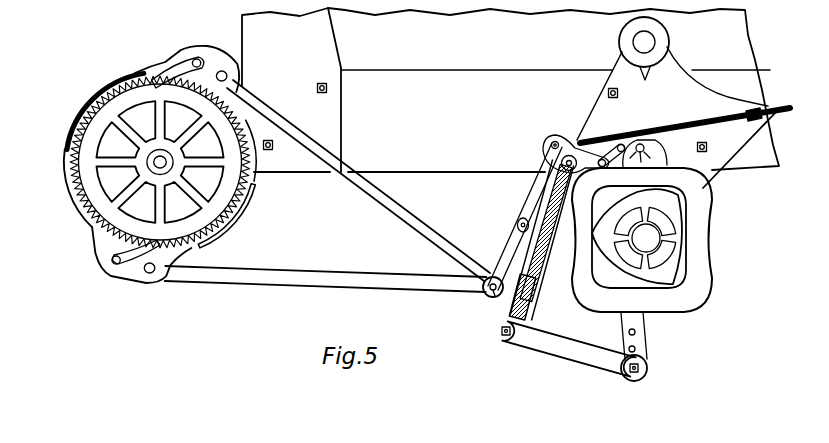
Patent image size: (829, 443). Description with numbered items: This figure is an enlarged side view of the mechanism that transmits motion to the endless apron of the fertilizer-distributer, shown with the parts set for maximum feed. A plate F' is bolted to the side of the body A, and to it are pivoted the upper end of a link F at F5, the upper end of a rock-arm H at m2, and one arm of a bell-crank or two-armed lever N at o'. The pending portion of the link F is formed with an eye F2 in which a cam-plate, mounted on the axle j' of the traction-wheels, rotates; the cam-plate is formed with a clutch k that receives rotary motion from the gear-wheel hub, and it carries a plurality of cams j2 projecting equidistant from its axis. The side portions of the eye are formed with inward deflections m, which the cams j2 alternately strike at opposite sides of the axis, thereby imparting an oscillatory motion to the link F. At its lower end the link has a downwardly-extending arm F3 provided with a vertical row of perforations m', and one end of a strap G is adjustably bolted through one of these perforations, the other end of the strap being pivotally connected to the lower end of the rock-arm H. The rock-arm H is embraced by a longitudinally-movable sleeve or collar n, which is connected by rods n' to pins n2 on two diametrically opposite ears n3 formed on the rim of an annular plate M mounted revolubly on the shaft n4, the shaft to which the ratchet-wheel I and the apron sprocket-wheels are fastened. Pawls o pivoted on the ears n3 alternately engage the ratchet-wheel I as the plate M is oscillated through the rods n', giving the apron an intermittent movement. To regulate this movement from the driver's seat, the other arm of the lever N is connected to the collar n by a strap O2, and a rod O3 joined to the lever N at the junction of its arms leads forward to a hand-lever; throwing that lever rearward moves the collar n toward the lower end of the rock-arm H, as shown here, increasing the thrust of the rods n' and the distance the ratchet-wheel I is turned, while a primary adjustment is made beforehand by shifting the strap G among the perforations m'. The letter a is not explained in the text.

The body A is at (510, 90).
The frame side bar a is at (555, 94).
The plate F' is at (677, 102).
The rod O3 is at (684, 128).
The bell-crank or two-armed lever N is at (570, 140).
The pivot of lever N o' is at (611, 155).
The pivot of link F F5 is at (668, 150).
The pivot of rock-arm H m2 is at (560, 163).
The inward deflections m is at (641, 240).
The eye F2 is at (688, 277).
The link F is at (656, 331).
The cams j2 is at (657, 282).
The axle j' is at (646, 238).
The clutch k is at (644, 237).
The perforations m' is at (647, 343).
The downwardly-extending arm F3 is at (648, 356).
The strap G is at (588, 358).
The rock-arm H is at (537, 278).
The sleeve or collar n is at (485, 299).
The strap O2 is at (513, 245).
The rods n' is at (327, 186).
The annular plate M is at (246, 203).
The ratchet-wheel I is at (88, 209).
The shaft n4 is at (149, 168).
The ears n3 is at (100, 280).
The pins n2 is at (222, 71).
The pawls o is at (158, 176).